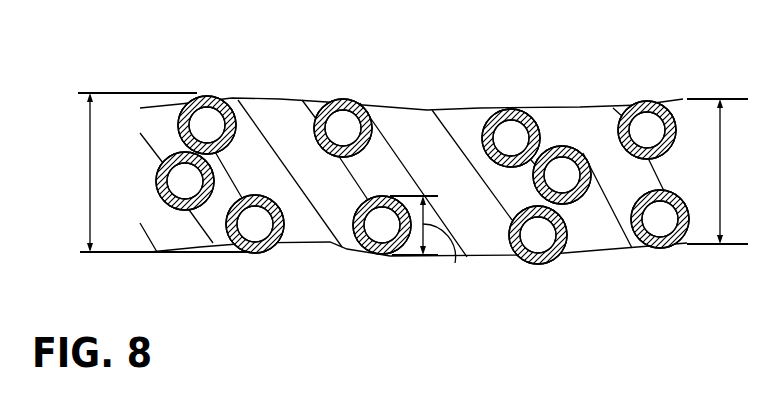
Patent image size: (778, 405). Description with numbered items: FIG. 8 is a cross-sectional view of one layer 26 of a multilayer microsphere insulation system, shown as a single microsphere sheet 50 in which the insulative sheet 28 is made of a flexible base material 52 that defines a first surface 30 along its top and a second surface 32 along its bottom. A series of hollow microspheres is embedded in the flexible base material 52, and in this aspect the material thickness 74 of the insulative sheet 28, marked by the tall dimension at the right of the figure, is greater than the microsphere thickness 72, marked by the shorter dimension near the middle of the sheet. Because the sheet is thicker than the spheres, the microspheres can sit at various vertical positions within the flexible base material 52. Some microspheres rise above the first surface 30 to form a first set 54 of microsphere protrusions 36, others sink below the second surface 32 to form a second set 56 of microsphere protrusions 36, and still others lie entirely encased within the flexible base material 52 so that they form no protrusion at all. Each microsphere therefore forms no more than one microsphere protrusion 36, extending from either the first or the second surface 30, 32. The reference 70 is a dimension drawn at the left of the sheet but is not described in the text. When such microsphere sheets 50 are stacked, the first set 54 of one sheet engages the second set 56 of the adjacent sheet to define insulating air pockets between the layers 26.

The layer 26 is at (198, 75).
The insulative sheet 28 is at (578, 108).
The first surface 30 is at (282, 98).
The second surface 32 is at (318, 245).
The microsphere protrusion 36 is at (345, 100).
The microsphere sheet 50 is at (663, 93).
The flexible base material 52 is at (607, 230).
The first set of microsphere protrusions 54 is at (208, 97).
The second set of microsphere protrusions 56 is at (255, 255).
The height 70 is at (85, 160).
The microsphere thickness 72 is at (429, 251).
The material thickness 74 is at (722, 147).